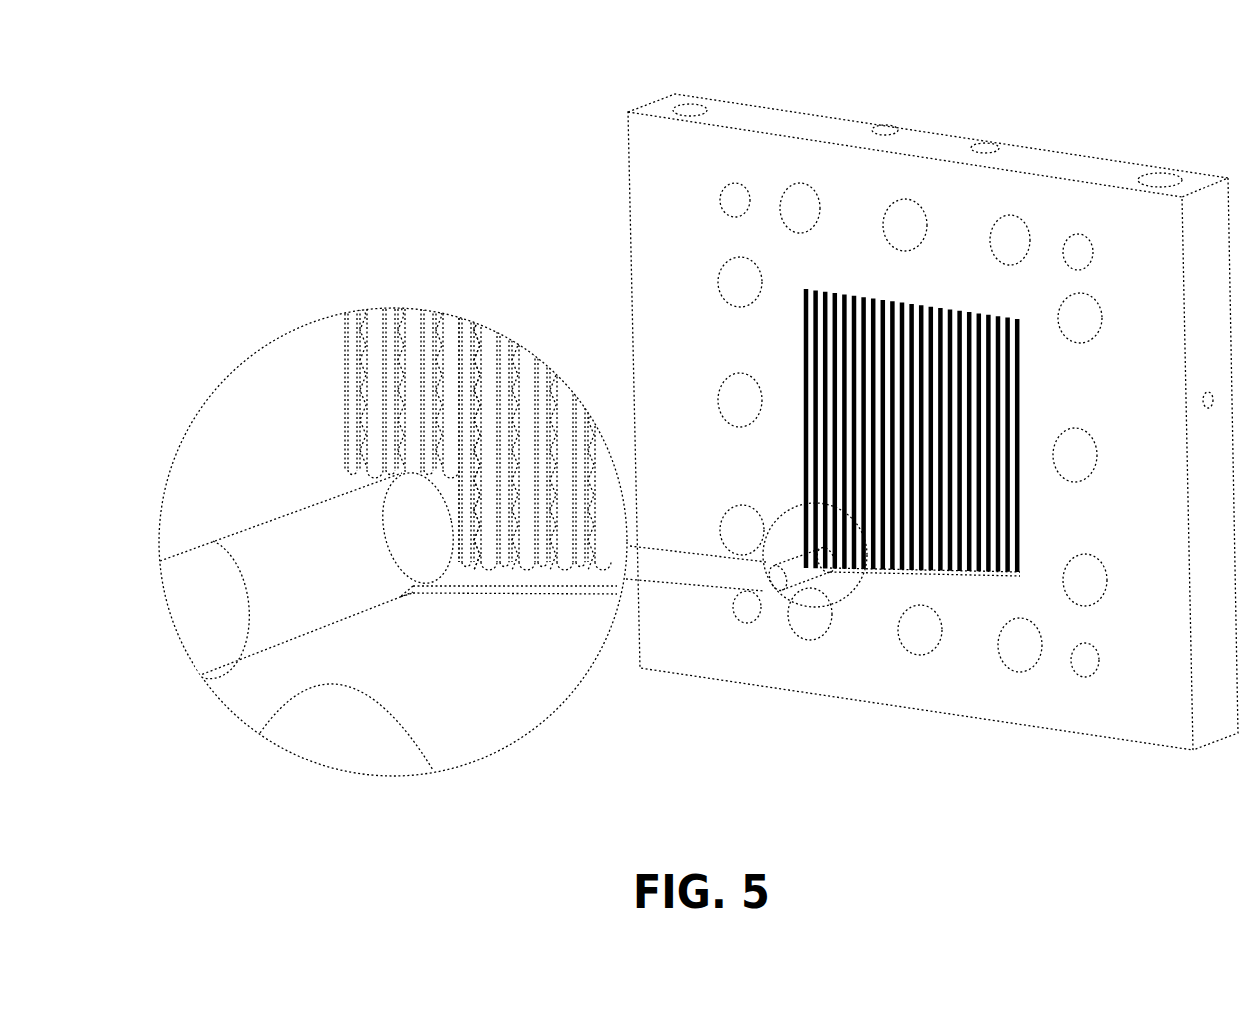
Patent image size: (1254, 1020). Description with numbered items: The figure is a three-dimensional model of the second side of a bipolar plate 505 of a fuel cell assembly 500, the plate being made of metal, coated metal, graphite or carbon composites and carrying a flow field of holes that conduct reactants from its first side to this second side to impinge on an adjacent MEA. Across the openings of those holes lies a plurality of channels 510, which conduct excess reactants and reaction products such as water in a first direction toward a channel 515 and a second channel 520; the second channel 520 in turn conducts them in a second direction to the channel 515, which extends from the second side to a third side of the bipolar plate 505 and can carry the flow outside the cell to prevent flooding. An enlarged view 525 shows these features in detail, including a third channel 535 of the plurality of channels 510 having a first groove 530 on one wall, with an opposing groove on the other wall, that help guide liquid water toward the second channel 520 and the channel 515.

The heat exchanger assembly 500 is at (186, 51).
The bipolar plate 505 is at (650, 103).
The plurality of channels 510 is at (800, 279).
The channel 515 is at (275, 520).
The second channel 520 is at (597, 583).
The enlarged view 525 is at (258, 348).
The first groove 530 is at (466, 347).
The third channel 535 is at (478, 374).